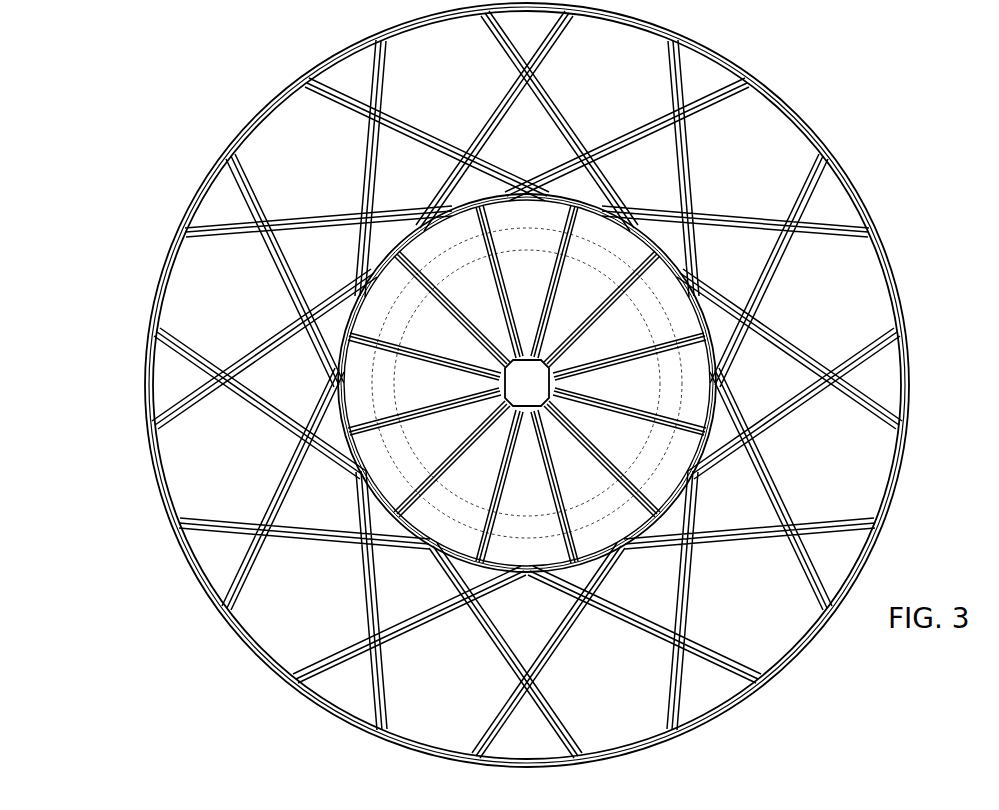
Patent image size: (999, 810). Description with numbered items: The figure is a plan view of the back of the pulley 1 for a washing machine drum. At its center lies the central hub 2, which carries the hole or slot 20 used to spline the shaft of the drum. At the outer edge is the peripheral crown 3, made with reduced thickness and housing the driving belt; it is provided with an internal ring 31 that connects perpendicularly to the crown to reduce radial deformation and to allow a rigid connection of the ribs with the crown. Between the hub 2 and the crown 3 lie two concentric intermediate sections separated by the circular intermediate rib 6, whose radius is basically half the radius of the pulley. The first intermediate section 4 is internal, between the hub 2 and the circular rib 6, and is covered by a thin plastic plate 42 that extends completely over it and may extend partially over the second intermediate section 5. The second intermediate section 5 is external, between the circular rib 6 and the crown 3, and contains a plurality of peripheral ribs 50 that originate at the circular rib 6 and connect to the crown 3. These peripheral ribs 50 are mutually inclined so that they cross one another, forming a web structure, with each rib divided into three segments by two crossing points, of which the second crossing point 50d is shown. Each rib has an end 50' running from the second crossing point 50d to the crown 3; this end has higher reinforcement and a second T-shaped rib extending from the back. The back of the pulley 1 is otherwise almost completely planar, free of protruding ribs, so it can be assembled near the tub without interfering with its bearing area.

The pulley 1 is at (213, 98).
The central hub 2 is at (519, 385).
The hole or slot 20 is at (648, 292).
The peripheral crown 3 is at (806, 650).
The internal ring 31 is at (873, 388).
The first intermediate section 4 is at (400, 455).
The plastic plate 42 is at (362, 394).
The second intermediate section 5 is at (333, 599).
The peripheral ribs 50 is at (278, 160).
The second crossing point 50d is at (258, 216).
The end of peripheral rib 50' is at (211, 346).
The circular intermediate rib 6 is at (468, 612).